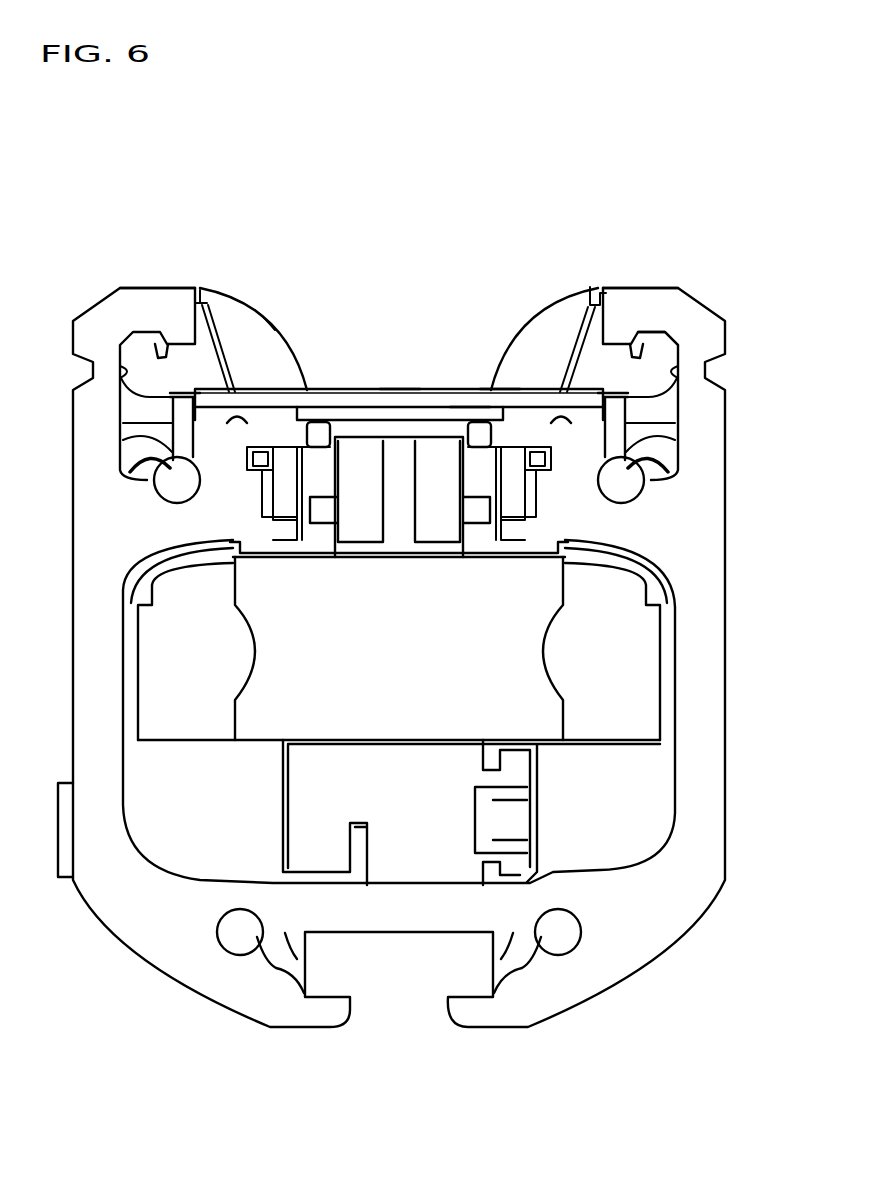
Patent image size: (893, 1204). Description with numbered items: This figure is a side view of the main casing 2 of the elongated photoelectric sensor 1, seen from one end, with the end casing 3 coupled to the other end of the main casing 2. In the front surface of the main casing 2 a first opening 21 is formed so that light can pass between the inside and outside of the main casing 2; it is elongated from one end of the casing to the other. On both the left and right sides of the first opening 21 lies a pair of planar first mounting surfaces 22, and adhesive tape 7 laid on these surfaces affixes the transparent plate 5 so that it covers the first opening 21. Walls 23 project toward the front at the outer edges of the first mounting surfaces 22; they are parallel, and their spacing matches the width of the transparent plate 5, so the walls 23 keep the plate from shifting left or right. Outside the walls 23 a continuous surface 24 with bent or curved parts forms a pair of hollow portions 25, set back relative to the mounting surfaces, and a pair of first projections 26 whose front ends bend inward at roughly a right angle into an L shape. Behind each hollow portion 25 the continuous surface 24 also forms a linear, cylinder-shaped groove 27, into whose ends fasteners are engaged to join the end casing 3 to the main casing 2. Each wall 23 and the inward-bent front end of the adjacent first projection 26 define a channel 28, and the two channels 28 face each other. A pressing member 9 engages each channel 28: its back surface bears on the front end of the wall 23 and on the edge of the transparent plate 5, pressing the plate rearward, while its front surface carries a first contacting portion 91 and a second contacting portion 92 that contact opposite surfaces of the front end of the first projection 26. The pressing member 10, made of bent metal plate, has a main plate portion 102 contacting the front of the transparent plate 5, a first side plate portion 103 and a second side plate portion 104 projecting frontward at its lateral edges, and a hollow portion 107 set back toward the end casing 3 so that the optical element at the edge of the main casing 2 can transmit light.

The elongated photoelectric sensor 1 is at (556, 176).
The main casing 2 is at (727, 648).
The end casing 3 is at (268, 321).
The transparent plate 5 is at (469, 402).
The adhesive tape 7 is at (268, 408).
The pressing member 9 is at (142, 350).
The pressing member 10 is at (213, 305).
The first opening 21 is at (440, 424).
The first mounting surfaces 22 is at (232, 420).
The walls 23 is at (183, 409).
The continuous surface 24 is at (124, 369).
The hollow portions 25 is at (136, 451).
The first projections 26 is at (163, 288).
The groove 27 is at (158, 492).
The channels 28 is at (186, 392).
The first contacting portion 91 is at (597, 318).
The second contacting portion 92 is at (643, 333).
The main plate portion 102 is at (498, 388).
The first side plate portion 103 is at (201, 288).
The second side plate portion 104 is at (263, 330).
The hollow portion 107 is at (402, 388).